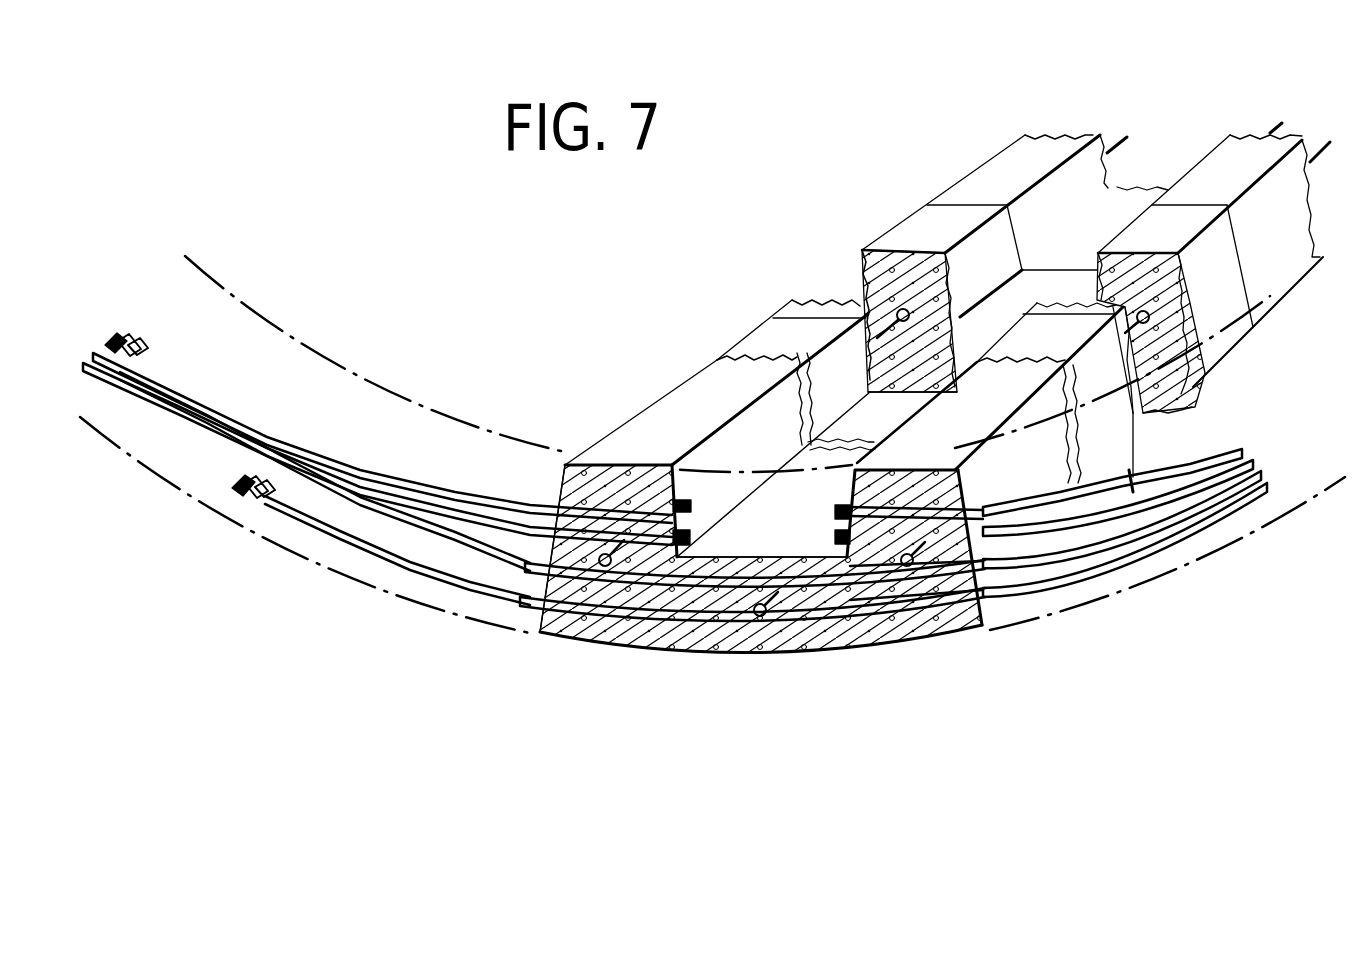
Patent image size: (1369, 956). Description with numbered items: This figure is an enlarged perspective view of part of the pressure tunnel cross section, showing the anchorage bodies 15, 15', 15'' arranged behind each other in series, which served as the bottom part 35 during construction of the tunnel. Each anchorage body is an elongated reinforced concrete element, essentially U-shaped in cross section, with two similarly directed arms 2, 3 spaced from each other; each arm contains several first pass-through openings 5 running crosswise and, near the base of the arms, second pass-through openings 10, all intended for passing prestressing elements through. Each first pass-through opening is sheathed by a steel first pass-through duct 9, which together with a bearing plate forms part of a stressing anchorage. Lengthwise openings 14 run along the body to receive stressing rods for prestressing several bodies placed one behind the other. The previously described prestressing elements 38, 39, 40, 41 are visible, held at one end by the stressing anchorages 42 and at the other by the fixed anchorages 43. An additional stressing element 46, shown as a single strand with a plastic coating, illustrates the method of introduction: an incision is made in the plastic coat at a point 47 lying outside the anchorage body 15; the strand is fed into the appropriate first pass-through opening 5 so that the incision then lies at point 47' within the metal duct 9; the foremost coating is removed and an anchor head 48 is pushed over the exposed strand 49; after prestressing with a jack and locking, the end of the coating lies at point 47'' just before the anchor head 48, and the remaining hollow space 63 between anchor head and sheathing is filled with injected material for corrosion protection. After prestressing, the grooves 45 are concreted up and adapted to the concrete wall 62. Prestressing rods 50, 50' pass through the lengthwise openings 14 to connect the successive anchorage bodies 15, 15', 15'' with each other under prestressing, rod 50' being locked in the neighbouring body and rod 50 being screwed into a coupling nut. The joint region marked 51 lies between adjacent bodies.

The arm 2 is at (958, 500).
The arm 3 is at (566, 464).
The first pass-through opening 5 is at (630, 472).
The first pass-through duct 9 is at (993, 503).
The second pass-through opening 10 is at (660, 640).
The lengthwise opening 14 is at (612, 600).
The anchorage body 15 is at (761, 382).
The anchorage body 15' is at (1009, 263).
The anchorage body 15'' is at (1187, 247).
The bottom part 35 is at (634, 414).
The prestressing element 38 is at (455, 498).
The prestressing element 39 is at (380, 490).
The prestressing element 40 is at (372, 525).
The prestressing element 41 is at (410, 568).
The stressing anchorage 42 is at (692, 522).
The fixed anchorage 43 is at (128, 338).
The groove 45 is at (732, 540).
The additional stressing element 46 is at (1193, 467).
The incision point 47 is at (1152, 555).
The incision point 47' is at (916, 626).
The end of plastic coating 47'' is at (916, 624).
The anchor head 48 is at (830, 552).
The exposed strand 49 is at (833, 512).
The prestressing rod 50 is at (772, 621).
The prestressing rod 50' is at (1002, 346).
The joint 51 is at (1153, 440).
The concrete wall 62 is at (270, 324).
The hollow space 63 is at (898, 452).